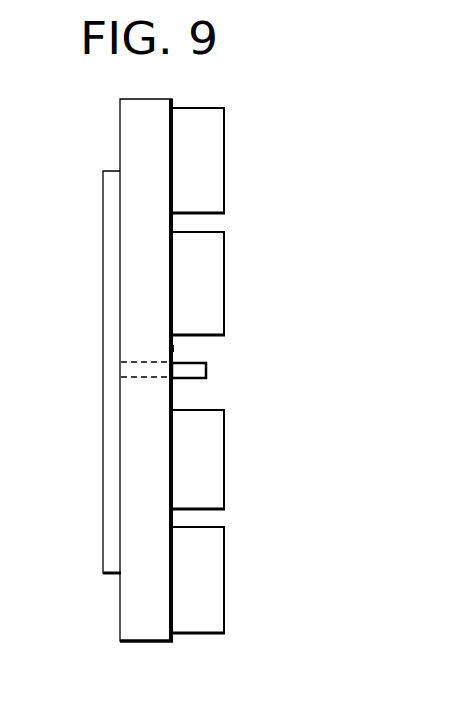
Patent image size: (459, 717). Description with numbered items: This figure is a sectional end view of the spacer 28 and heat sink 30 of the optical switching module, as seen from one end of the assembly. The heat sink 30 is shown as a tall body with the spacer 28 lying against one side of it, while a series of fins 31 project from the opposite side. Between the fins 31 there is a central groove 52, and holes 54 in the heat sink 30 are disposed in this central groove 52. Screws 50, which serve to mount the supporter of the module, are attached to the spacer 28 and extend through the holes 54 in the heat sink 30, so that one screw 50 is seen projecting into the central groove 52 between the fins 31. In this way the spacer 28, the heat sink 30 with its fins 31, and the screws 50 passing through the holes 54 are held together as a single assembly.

The heat sink 30 is at (122, 122).
The fins 31 is at (217, 118).
The spacer 28 is at (107, 554).
The central groove 52 is at (198, 348).
The screws 50 is at (207, 368).
The holes 54 is at (135, 362).